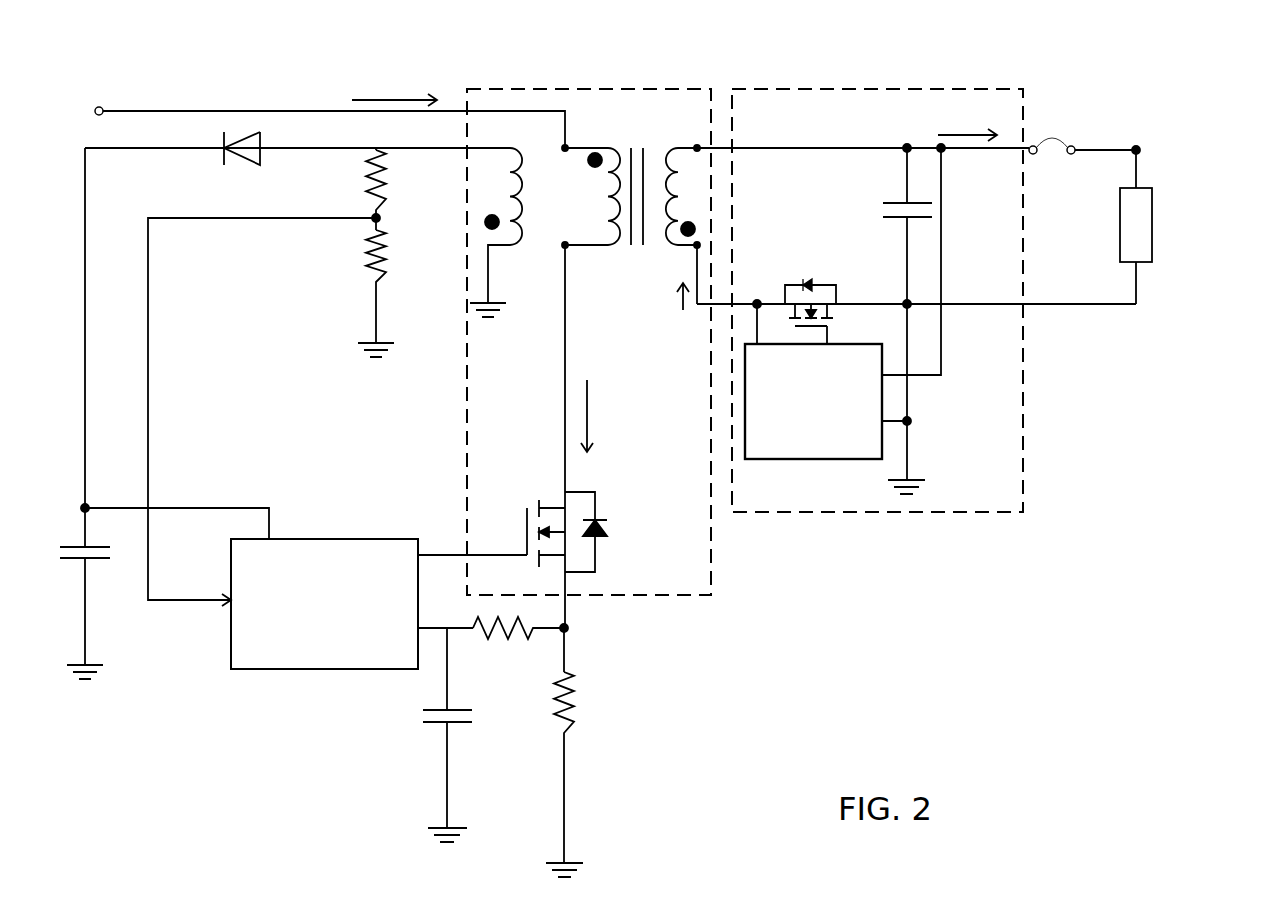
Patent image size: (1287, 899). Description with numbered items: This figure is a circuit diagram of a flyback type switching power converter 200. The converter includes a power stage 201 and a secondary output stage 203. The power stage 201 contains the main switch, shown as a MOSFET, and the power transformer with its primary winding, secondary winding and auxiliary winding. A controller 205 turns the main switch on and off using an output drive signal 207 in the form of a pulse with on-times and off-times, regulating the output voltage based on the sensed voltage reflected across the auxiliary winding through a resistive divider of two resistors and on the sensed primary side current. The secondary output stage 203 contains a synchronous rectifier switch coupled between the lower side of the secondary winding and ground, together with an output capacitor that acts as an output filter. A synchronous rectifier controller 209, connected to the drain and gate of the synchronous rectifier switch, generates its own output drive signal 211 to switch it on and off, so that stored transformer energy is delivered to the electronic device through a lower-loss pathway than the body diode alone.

The switching power converter 200 is at (661, 443).
The power stage 201 is at (467, 89).
The secondary output stage 203 is at (805, 89).
The controller 205 is at (325, 539).
The output drive signal 207 is at (507, 548).
The synchronous rectifier (SR) controller 209 is at (776, 472).
The output drive signal 211 is at (842, 333).